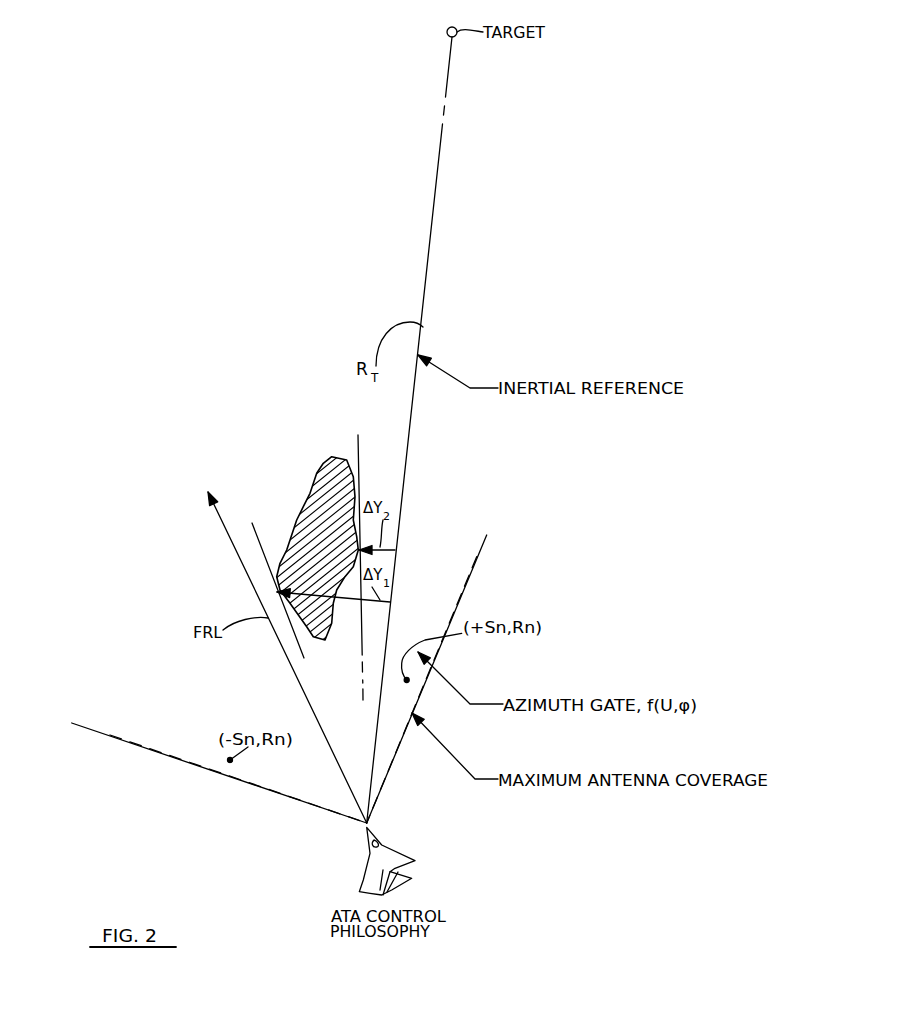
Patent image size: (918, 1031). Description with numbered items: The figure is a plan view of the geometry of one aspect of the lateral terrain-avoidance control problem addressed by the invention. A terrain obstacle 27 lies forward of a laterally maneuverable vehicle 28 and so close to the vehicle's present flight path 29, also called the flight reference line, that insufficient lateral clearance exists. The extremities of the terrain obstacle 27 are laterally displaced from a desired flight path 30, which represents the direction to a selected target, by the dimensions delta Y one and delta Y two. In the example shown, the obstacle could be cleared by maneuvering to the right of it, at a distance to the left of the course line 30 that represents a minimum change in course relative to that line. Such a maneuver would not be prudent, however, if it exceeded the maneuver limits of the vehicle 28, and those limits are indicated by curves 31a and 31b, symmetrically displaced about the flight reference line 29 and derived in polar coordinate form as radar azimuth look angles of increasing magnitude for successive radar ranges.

The terrain obstacle 27 is at (332, 457).
The laterally maneuverable vehicle 28 is at (373, 840).
The present flight path (flight reference line) 29 is at (223, 532).
The desired flight path 30 is at (406, 460).
The maneuver-limit curve 31a is at (162, 745).
The maneuver-limit curve 31b is at (458, 582).